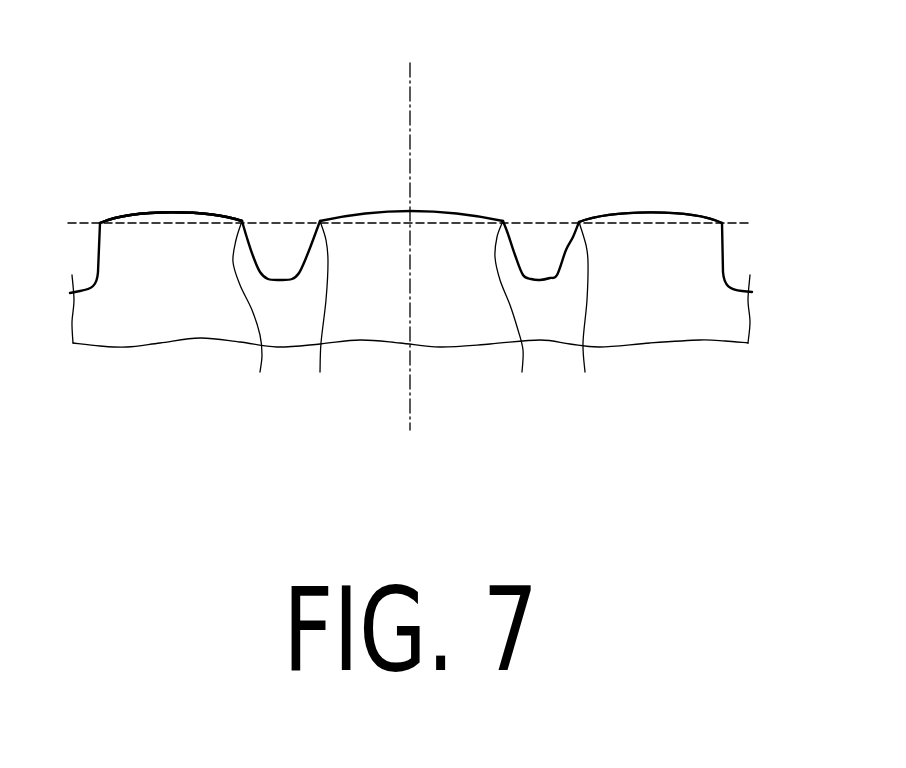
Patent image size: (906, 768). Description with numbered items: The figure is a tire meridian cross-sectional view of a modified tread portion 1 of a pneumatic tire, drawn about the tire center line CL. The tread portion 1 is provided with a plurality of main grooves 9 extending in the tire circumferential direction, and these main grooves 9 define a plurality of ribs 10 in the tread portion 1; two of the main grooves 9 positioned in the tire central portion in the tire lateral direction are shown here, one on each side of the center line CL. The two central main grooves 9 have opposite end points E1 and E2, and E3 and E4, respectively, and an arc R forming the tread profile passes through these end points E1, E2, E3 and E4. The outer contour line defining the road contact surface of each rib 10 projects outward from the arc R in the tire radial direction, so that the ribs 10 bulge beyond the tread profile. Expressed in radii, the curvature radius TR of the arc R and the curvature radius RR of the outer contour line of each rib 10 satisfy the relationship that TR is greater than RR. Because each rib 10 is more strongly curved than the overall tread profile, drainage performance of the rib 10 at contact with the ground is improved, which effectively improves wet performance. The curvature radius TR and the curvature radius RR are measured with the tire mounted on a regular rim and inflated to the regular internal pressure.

The tread portion 1 is at (603, 167).
The main groove 9 is at (308, 235).
The rib 10 is at (142, 240).
The tire equatorial plane (center line) CL is at (412, 225).
The arc R is at (277, 222).
The curvature radius of the arc TR is at (175, 223).
The curvature radius of the outer contour line of the rib RR is at (652, 214).
The end point E1 is at (253, 316).
The end point E2 is at (325, 316).
The end point E3 is at (515, 317).
The end point E4 is at (581, 317).